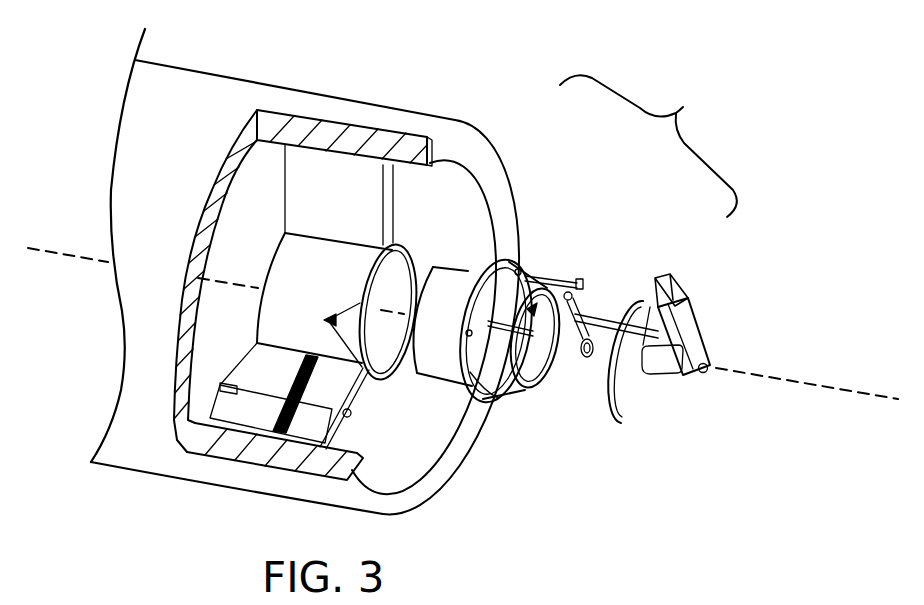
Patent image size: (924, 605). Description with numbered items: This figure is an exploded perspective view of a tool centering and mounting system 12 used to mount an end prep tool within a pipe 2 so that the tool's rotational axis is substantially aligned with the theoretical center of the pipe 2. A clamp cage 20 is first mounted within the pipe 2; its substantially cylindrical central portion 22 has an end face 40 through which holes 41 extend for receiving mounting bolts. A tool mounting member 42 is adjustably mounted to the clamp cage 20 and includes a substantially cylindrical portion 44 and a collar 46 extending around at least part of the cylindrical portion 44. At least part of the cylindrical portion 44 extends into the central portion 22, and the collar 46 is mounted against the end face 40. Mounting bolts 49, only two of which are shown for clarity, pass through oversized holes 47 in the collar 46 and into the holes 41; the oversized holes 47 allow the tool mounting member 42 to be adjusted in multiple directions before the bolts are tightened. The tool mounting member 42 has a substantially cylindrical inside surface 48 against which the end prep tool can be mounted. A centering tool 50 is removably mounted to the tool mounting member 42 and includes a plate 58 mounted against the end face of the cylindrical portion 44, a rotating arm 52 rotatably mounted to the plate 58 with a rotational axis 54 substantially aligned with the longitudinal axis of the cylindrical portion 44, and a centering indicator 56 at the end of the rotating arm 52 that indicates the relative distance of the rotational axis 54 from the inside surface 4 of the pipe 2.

The pipe 2 is at (187, 70).
The inside surface 4 is at (395, 466).
The tool centering and mounting system 12 is at (648, 146).
The clamp cage 20 is at (433, 197).
The central portion 22 is at (287, 251).
The end face 40 is at (411, 241).
The holes 41 is at (328, 335).
The tool mounting member 42 is at (553, 264).
The cylindrical portion 44 is at (428, 376).
The collar 46 is at (498, 398).
The oversized holes 47 is at (520, 268).
The inside surface 48 is at (488, 294).
The mounting bolts 49 is at (580, 282).
The centering tool 50 is at (702, 313).
The rotating arm 52 is at (700, 343).
The rotational axis 54 is at (805, 383).
The centering indicator 56 is at (585, 305).
The plate 58 is at (630, 410).